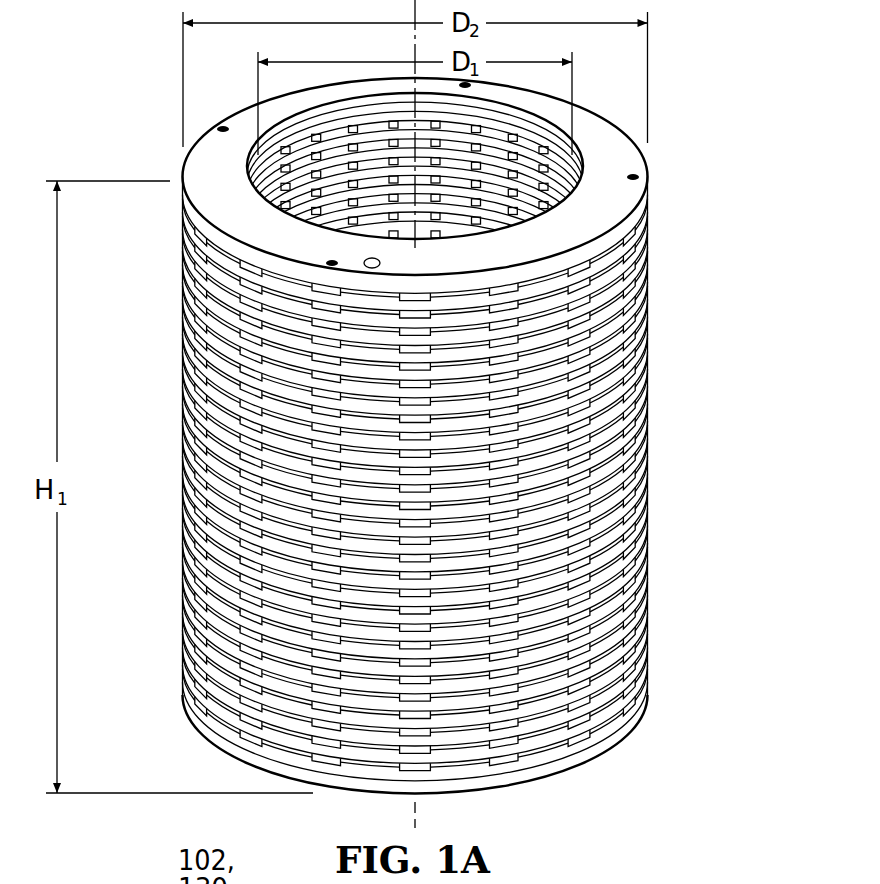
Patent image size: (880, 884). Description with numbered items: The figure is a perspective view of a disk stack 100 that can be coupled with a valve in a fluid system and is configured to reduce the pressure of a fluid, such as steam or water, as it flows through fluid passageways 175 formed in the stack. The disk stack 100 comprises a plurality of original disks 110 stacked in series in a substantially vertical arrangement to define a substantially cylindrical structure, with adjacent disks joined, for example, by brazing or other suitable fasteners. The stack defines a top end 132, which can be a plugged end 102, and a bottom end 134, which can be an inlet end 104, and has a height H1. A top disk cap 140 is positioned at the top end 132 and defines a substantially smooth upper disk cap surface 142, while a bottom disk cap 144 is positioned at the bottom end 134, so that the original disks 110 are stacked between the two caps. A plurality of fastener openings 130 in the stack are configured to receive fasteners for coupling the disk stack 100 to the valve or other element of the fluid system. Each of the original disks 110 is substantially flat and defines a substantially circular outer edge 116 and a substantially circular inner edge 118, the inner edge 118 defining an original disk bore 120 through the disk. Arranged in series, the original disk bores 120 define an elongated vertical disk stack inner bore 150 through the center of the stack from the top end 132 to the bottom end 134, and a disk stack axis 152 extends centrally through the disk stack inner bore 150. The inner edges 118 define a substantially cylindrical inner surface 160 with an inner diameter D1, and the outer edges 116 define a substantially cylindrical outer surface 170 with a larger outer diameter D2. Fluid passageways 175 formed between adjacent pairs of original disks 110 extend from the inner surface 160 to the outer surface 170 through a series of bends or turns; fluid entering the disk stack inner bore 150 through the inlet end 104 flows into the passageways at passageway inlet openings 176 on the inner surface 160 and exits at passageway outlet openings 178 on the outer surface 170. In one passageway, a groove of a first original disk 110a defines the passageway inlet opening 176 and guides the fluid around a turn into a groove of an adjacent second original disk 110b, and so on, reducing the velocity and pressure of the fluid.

The disk stack 100 is at (118, 66).
The plugged end 102 is at (690, 128).
The inlet end 104 is at (672, 768).
The original disks 110 is at (628, 378).
The first original disk 110a is at (632, 390).
The second original disk 110b is at (612, 435).
The outer edge 116 is at (625, 478).
The inner edge 118 is at (262, 148).
The original disk bore 120 is at (583, 170).
The fastener openings 130 is at (636, 176).
The top end 132 is at (603, 220).
The bottom end 134 is at (632, 730).
The top disk cap 140 is at (200, 160).
The upper disk cap surface 142 is at (566, 238).
The bottom disk cap 144 is at (243, 755).
The disk stack inner bore 150 is at (290, 206).
The disk stack axis 152 is at (413, 47).
The inner surface 160 is at (610, 86).
The outer surface 170 is at (575, 556).
The fluid passageways 175 is at (247, 445).
The passageway inlet openings 176 is at (489, 184).
The passageway outlet openings 178 is at (320, 570).